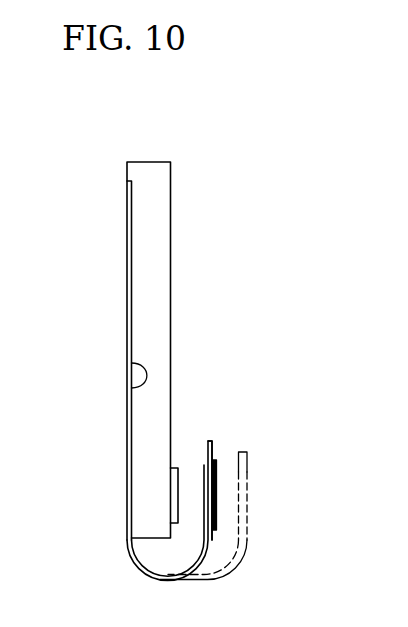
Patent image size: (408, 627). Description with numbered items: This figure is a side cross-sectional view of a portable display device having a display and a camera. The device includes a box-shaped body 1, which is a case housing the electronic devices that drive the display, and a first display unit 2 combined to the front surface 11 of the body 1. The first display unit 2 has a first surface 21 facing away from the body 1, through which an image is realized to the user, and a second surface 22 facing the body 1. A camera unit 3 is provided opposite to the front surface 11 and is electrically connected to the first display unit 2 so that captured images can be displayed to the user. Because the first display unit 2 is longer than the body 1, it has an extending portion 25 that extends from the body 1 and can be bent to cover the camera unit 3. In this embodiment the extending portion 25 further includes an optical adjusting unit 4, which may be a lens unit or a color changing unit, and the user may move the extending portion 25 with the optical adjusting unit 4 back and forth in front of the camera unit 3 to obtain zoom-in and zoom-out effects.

The body 1 is at (165, 208).
The front surface 11 is at (133, 257).
The first display unit 2 is at (127, 300).
The first surface 21 is at (127, 348).
The second surface 22 is at (130, 385).
The camera unit 3 is at (178, 468).
The extending portion 25 is at (212, 443).
The optical adjusting unit 4 is at (215, 460).